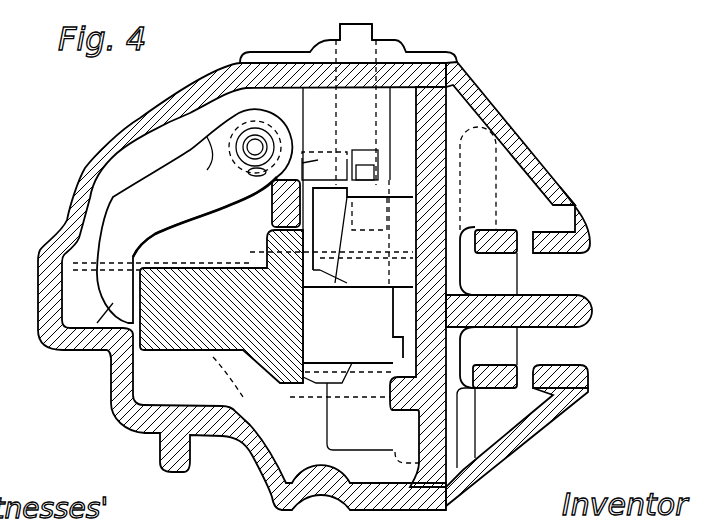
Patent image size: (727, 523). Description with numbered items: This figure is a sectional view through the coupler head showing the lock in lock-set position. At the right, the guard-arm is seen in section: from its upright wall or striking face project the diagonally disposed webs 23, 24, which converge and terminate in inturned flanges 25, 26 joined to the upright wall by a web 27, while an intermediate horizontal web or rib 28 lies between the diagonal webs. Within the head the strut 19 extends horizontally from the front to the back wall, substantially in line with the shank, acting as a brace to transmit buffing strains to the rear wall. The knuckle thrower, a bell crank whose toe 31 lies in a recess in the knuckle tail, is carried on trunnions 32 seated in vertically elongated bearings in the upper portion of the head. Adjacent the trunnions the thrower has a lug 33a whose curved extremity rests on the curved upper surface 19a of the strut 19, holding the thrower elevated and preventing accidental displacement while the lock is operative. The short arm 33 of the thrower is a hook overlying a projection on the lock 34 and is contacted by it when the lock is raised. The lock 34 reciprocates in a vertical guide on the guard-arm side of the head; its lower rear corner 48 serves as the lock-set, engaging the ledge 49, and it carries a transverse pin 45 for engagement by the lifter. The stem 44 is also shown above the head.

The strut 19 is at (300, 214).
The curved upper surface of the strut 19a is at (270, 207).
The diagonally disposed web 23 is at (536, 158).
The diagonally disposed web 24 is at (539, 442).
The inturned flange 25 is at (560, 252).
The inturned flange 26 is at (560, 365).
The web 27 is at (490, 232).
The intermediate horizontal web or rib 28 is at (590, 310).
The toe of the knuckle thrower 31 is at (73, 350).
The trunnions 32 is at (232, 132).
The short arm of the knuckle thrower 33 is at (315, 143).
The lug 33a is at (248, 146).
The lock 34 is at (358, 237).
The stem 44 is at (372, 27).
The transverse pin 45 is at (360, 158).
The lower rear corner of the lock 48 is at (403, 343).
The ledge 49 is at (402, 347).